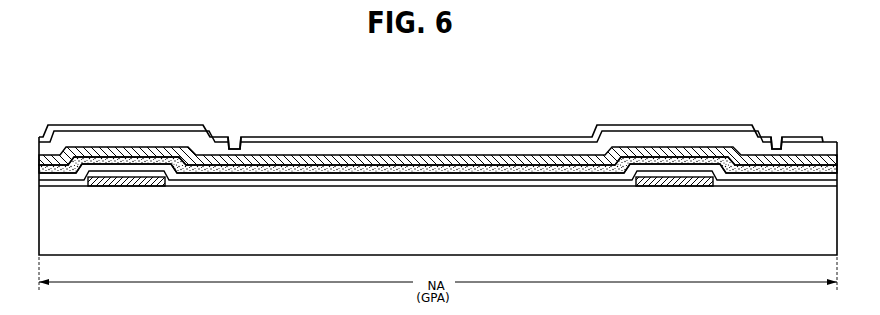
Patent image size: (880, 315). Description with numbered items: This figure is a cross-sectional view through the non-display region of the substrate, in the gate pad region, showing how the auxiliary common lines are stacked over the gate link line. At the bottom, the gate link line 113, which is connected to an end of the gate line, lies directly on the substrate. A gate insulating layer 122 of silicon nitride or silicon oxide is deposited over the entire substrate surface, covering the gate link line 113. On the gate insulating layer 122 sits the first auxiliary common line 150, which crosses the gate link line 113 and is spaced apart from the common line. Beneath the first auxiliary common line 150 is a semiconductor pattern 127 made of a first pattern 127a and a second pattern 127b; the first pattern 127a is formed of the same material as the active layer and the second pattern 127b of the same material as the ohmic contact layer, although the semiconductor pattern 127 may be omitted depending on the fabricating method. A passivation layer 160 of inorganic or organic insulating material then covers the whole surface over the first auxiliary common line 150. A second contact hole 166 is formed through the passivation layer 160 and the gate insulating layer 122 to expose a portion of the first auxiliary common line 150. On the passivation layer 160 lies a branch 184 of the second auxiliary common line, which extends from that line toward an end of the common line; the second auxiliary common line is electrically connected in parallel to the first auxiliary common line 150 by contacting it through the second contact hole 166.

The gate link line 113 is at (128, 187).
The gate insulating layer 122 is at (388, 182).
The semiconductor pattern 127 is at (438, 205).
The first pattern 127a is at (463, 176).
The second pattern 127b is at (494, 173).
The first auxiliary common line 150 is at (433, 157).
The passivation layer 160 is at (323, 148).
The branch 184 is at (512, 142).
The second contact hole 166 is at (233, 121).